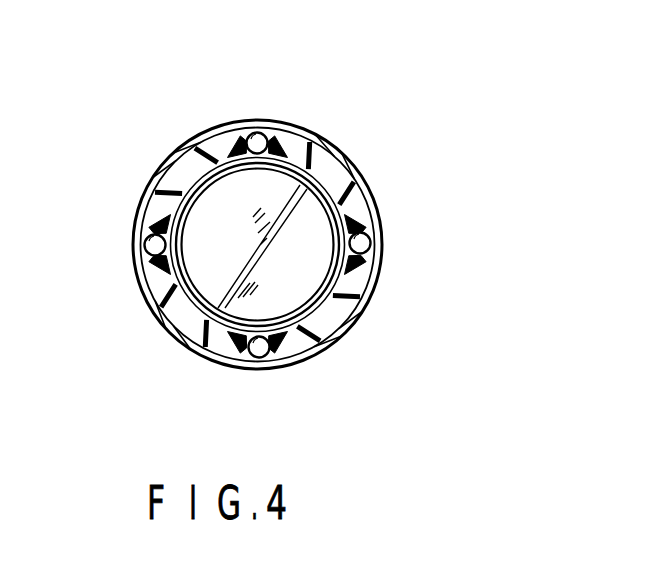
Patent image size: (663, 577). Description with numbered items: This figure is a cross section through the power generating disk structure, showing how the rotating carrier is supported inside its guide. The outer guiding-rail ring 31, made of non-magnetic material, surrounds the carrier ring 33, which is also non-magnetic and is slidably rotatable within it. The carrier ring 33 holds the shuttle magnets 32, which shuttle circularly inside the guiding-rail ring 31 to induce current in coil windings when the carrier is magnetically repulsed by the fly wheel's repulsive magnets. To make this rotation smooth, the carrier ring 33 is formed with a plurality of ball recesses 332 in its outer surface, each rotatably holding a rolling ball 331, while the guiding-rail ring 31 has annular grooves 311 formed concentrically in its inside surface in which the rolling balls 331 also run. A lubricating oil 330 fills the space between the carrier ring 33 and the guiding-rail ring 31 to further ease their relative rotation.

The guiding-rail ring 31 is at (207, 140).
The annular groove 311 is at (374, 250).
The shuttle magnet 32 is at (267, 270).
The carrier ring 33 is at (327, 173).
The lubricating oil 330 is at (168, 187).
The rolling ball 331 is at (264, 136).
The ball recess 332 is at (357, 267).